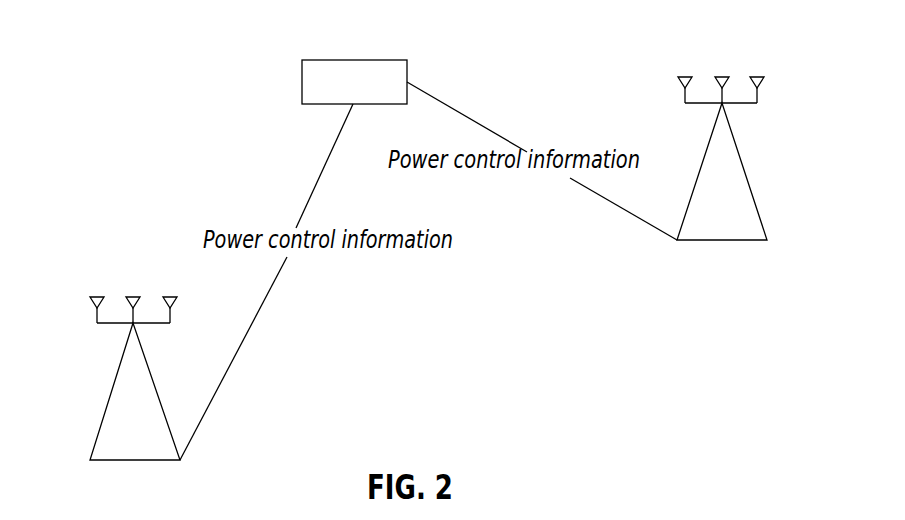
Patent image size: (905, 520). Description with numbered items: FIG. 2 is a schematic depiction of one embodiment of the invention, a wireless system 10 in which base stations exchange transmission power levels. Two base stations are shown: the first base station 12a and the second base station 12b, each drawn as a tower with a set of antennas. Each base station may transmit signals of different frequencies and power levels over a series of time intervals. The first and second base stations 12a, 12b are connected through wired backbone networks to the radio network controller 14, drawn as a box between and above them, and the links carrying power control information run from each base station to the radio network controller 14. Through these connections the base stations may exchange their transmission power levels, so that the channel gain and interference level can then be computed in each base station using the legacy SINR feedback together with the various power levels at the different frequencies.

The wireless communication system 10 is at (168, 66).
The radio network controller 14 is at (378, 62).
The base station BS1 12a is at (100, 378).
The base station BS2 12b is at (758, 158).